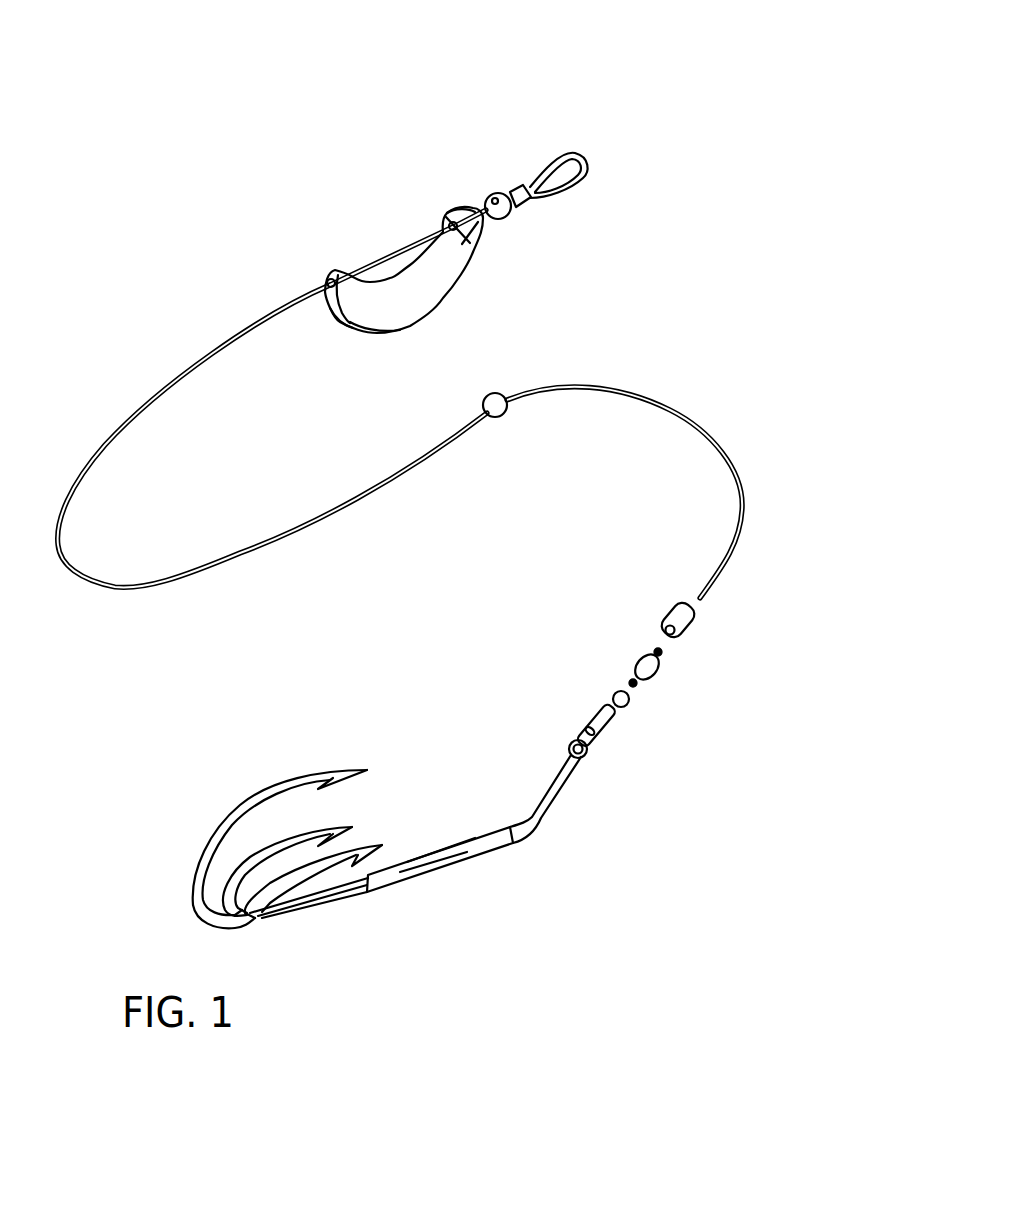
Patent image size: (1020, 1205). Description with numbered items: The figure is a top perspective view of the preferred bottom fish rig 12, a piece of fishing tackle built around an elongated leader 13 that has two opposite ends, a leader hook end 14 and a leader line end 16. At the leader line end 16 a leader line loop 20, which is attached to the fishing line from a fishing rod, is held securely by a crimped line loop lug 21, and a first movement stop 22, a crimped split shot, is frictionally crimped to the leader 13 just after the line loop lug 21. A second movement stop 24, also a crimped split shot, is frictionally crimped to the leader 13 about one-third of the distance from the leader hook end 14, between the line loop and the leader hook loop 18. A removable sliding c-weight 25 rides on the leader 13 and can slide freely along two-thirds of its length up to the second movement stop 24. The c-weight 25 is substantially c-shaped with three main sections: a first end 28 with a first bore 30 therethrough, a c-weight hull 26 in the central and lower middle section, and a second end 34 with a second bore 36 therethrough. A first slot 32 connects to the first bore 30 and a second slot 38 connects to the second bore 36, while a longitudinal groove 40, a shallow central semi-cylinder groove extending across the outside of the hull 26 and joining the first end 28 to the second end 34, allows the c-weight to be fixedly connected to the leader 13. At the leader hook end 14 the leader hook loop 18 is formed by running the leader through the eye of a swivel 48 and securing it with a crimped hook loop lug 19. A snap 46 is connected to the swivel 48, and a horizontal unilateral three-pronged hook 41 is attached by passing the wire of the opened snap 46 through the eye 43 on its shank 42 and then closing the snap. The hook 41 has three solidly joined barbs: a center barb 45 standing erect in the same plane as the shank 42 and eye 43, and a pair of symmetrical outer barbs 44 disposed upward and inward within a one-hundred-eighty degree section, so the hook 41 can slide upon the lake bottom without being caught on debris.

The bottom fish rig 12 is at (698, 82).
The leader 13 is at (273, 540).
The leader hook end 14 is at (732, 456).
The leader line end 16 is at (411, 280).
The leader hook loop 18 is at (673, 637).
The hook loop lug 19 is at (697, 615).
The leader line loop 20 is at (543, 160).
The line loop lug 21 is at (533, 200).
The first movement stop 22 is at (492, 197).
The second movement stop 24 is at (507, 413).
The removable sliding c-weight 25 is at (366, 328).
The c-weight hull 26 is at (445, 303).
The first end 28 is at (480, 228).
The first bore 30 is at (447, 213).
The first slot 32 is at (480, 240).
The second end 34 is at (330, 310).
The second bore 36 is at (328, 278).
The second slot 38 is at (325, 284).
The longitudinal groove 40 is at (342, 312).
The horizontal unilateral three-pronged hook 41 is at (212, 767).
The shank 42 is at (473, 857).
The eye 43 is at (575, 745).
The outer barbs 44 is at (347, 825).
The center barb 45 is at (340, 772).
The snap 46 is at (607, 717).
The swivel 48 is at (662, 662).